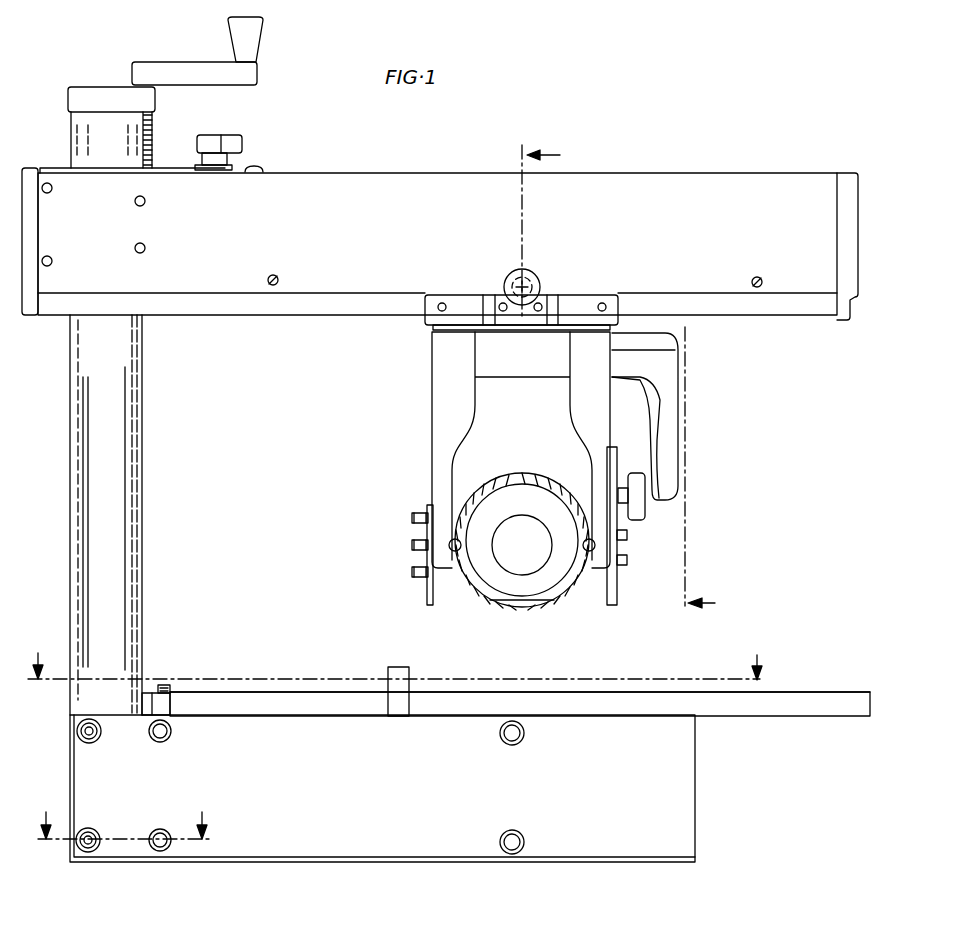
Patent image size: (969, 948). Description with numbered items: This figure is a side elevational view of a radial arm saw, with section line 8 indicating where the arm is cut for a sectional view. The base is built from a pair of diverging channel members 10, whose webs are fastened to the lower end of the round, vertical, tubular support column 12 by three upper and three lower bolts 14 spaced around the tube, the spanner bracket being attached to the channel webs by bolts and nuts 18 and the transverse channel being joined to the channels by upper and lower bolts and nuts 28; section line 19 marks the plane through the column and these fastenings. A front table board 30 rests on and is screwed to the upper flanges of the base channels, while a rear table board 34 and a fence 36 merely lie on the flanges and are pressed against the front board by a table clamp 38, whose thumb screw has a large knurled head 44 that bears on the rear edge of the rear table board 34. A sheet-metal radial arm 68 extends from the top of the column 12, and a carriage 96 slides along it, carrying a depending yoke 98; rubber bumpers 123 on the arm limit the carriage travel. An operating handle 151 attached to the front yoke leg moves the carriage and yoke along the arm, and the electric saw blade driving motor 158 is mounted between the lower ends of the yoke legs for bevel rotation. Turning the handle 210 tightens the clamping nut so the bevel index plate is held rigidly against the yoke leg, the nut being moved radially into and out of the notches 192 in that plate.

The channel members 10 is at (695, 794).
The tubular support column 12 is at (140, 492).
The bolts 14 is at (91, 828).
The bolts and nuts 18 is at (156, 828).
The section line 19 is at (122, 813).
The upper and lower bolts and nuts 28 is at (518, 829).
The front table board 30 is at (475, 690).
The rear table board 34 is at (243, 690).
The fence 36 is at (393, 667).
The table clamp 38 is at (146, 692).
The knurled head 44 is at (165, 686).
The radial arm 68 is at (350, 172).
The carriage 96 is at (424, 320).
The yoke 98 is at (431, 372).
The rubber bumpers 123 is at (268, 276).
The operating handle 151 is at (670, 405).
The electric saw blade driving motor 158 is at (533, 597).
The notches 192 is at (206, 44).
The handle 210 is at (240, 135).
The section line 8- 8 is at (628, 381).